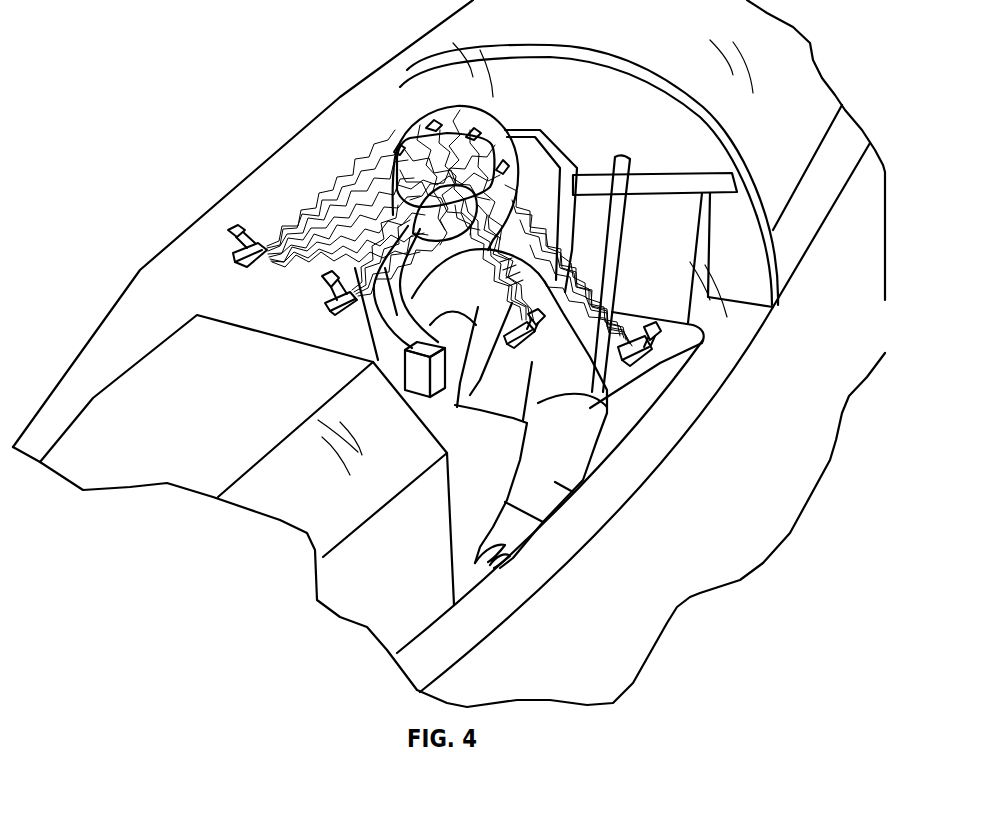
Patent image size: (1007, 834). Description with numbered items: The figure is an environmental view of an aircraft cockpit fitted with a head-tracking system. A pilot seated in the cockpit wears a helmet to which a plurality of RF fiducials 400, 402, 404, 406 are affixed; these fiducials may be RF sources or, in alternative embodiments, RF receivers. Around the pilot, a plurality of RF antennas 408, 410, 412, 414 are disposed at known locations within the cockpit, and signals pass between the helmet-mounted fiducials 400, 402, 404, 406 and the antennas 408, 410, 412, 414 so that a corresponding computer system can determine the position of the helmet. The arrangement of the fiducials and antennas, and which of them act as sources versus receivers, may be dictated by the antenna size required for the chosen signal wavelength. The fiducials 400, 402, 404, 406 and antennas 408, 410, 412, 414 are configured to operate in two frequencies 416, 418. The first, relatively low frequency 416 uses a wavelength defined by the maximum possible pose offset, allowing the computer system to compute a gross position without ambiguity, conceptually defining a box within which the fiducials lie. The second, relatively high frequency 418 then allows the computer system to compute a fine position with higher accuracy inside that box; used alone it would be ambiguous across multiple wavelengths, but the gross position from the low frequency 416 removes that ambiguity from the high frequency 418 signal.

The RF fiducial 400 is at (397, 150).
The RF fiducial 402 is at (397, 150).
The RF fiducial 404 is at (475, 133).
The RF fiducial 406 is at (503, 165).
The RF antenna 408 is at (233, 230).
The RF antenna 410 is at (330, 297).
The RF antenna 412 is at (528, 352).
The RF antenna 414 is at (648, 355).
The low frequency 416 is at (405, 72).
The high frequency 418 is at (320, 188).